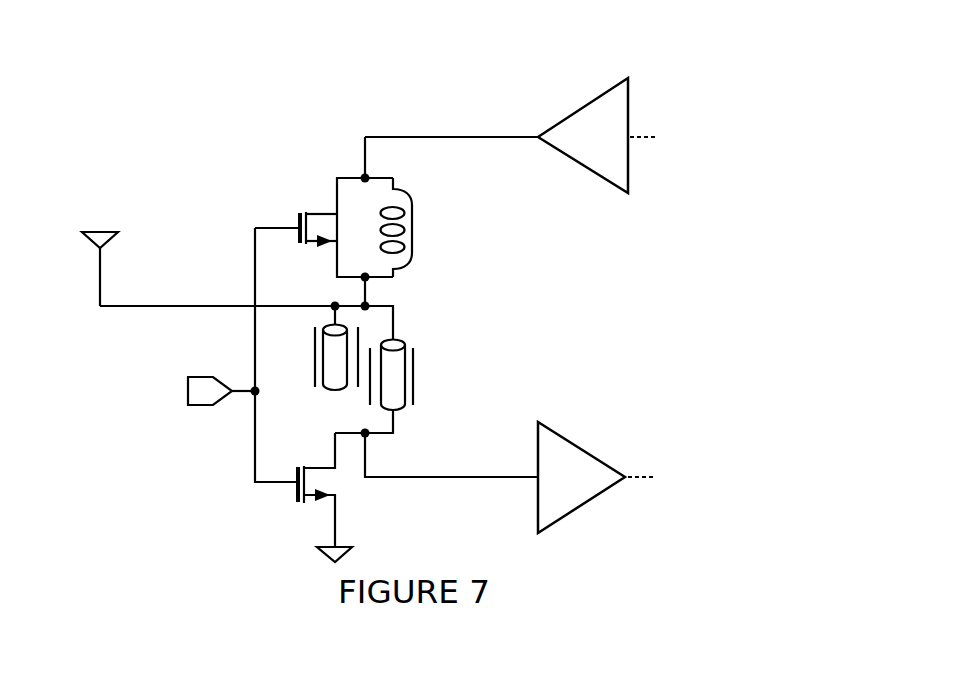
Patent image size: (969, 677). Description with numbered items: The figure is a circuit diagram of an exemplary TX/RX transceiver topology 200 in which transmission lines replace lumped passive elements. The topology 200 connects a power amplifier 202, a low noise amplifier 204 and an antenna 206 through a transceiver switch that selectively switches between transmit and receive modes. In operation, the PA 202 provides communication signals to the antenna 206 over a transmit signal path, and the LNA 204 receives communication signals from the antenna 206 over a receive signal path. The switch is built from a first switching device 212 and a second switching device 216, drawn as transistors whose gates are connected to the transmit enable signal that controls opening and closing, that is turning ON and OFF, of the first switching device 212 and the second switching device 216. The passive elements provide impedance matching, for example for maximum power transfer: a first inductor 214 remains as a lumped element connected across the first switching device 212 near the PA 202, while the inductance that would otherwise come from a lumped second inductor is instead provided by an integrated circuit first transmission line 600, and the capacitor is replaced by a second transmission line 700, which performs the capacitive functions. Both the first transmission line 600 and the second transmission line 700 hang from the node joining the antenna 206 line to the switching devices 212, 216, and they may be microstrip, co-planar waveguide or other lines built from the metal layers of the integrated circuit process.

The TX/RX transceiver topology 200 is at (127, 119).
The power amplifier (PA) 202 is at (568, 114).
The low noise amplifier (LNA) 204 is at (570, 438).
The antenna 206 is at (100, 232).
The first switching device (SW1) 212 is at (259, 211).
The first inductor (L1) 214 is at (421, 203).
The second switching device (SW2) 216 is at (286, 497).
The transmission line TL1 600 is at (398, 343).
The transmission line TL2 700 is at (330, 391).